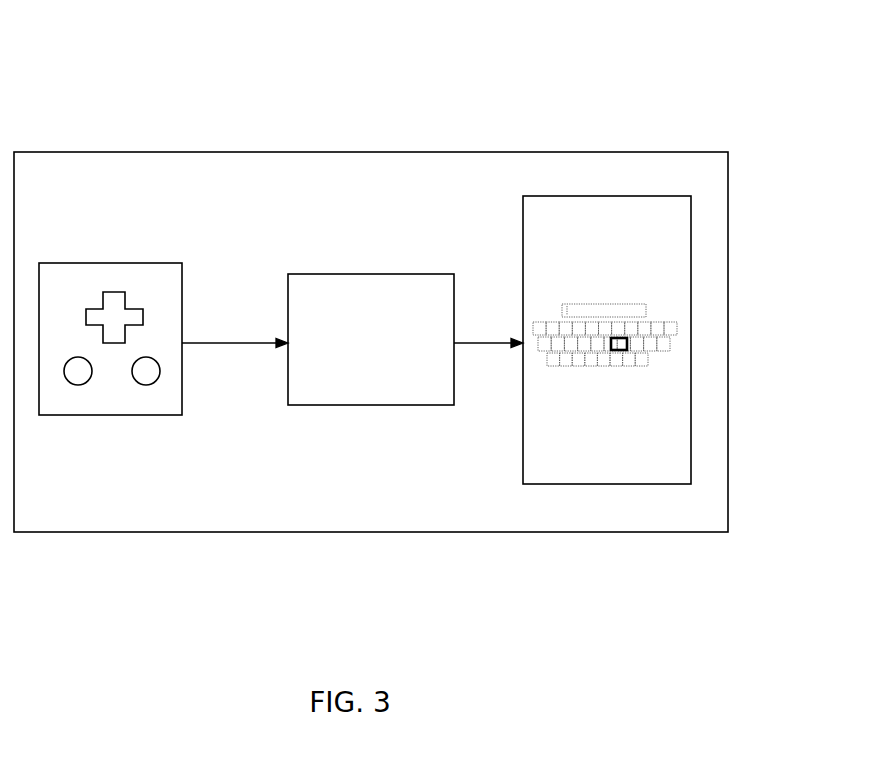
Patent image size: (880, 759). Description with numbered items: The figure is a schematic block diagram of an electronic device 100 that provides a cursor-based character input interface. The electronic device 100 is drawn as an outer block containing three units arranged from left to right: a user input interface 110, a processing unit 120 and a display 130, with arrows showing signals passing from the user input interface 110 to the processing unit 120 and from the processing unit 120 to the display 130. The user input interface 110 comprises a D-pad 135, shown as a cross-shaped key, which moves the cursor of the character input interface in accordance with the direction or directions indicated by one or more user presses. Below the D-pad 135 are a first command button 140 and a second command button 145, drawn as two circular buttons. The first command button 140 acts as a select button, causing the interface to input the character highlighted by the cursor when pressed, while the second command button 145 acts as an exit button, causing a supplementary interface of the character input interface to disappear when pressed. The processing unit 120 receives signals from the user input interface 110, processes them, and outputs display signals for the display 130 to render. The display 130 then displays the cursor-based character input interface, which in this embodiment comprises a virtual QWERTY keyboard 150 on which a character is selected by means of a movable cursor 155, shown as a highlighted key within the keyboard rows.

The electronic device 100 is at (177, 152).
The user input interface 110 is at (172, 263).
The processing unit 120 is at (388, 398).
The display 130 is at (567, 486).
The D-pad 135 is at (117, 292).
The first command button 140 is at (75, 378).
The second command button 145 is at (146, 380).
The virtual QWERTY keyboard 150 is at (642, 366).
The movable cursor 155 is at (618, 336).